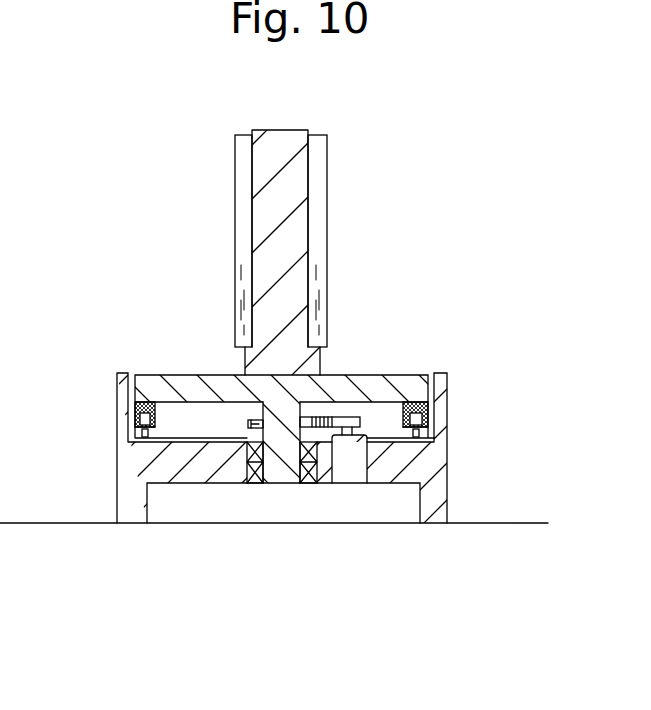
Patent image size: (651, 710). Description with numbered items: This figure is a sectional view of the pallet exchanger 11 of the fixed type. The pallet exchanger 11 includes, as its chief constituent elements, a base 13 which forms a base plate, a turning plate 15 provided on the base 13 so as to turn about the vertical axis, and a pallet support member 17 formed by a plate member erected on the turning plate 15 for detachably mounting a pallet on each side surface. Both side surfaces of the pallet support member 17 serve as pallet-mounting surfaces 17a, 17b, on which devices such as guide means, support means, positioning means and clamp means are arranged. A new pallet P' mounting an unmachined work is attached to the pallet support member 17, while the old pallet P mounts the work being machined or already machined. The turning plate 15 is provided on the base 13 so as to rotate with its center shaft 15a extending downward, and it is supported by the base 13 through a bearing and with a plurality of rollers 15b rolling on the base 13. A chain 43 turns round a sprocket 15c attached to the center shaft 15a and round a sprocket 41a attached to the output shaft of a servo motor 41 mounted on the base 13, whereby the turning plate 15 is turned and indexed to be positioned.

The pallet exchanger 11 is at (398, 125).
The base 13 is at (433, 478).
The turning plate 15 is at (395, 380).
The center shaft 15a is at (281, 455).
The rollers 15b is at (140, 440).
The sprocket 15c is at (247, 421).
The pallet support member 17 is at (288, 140).
The pallet-mounting surface 17a is at (310, 232).
The pallet-mounting surface 17b is at (246, 225).
The old pallet P is at (341, 244).
The new pallet P' is at (212, 244).
The servo motor 41 is at (351, 470).
The sprocket 41a is at (357, 417).
The chain 43 is at (322, 417).